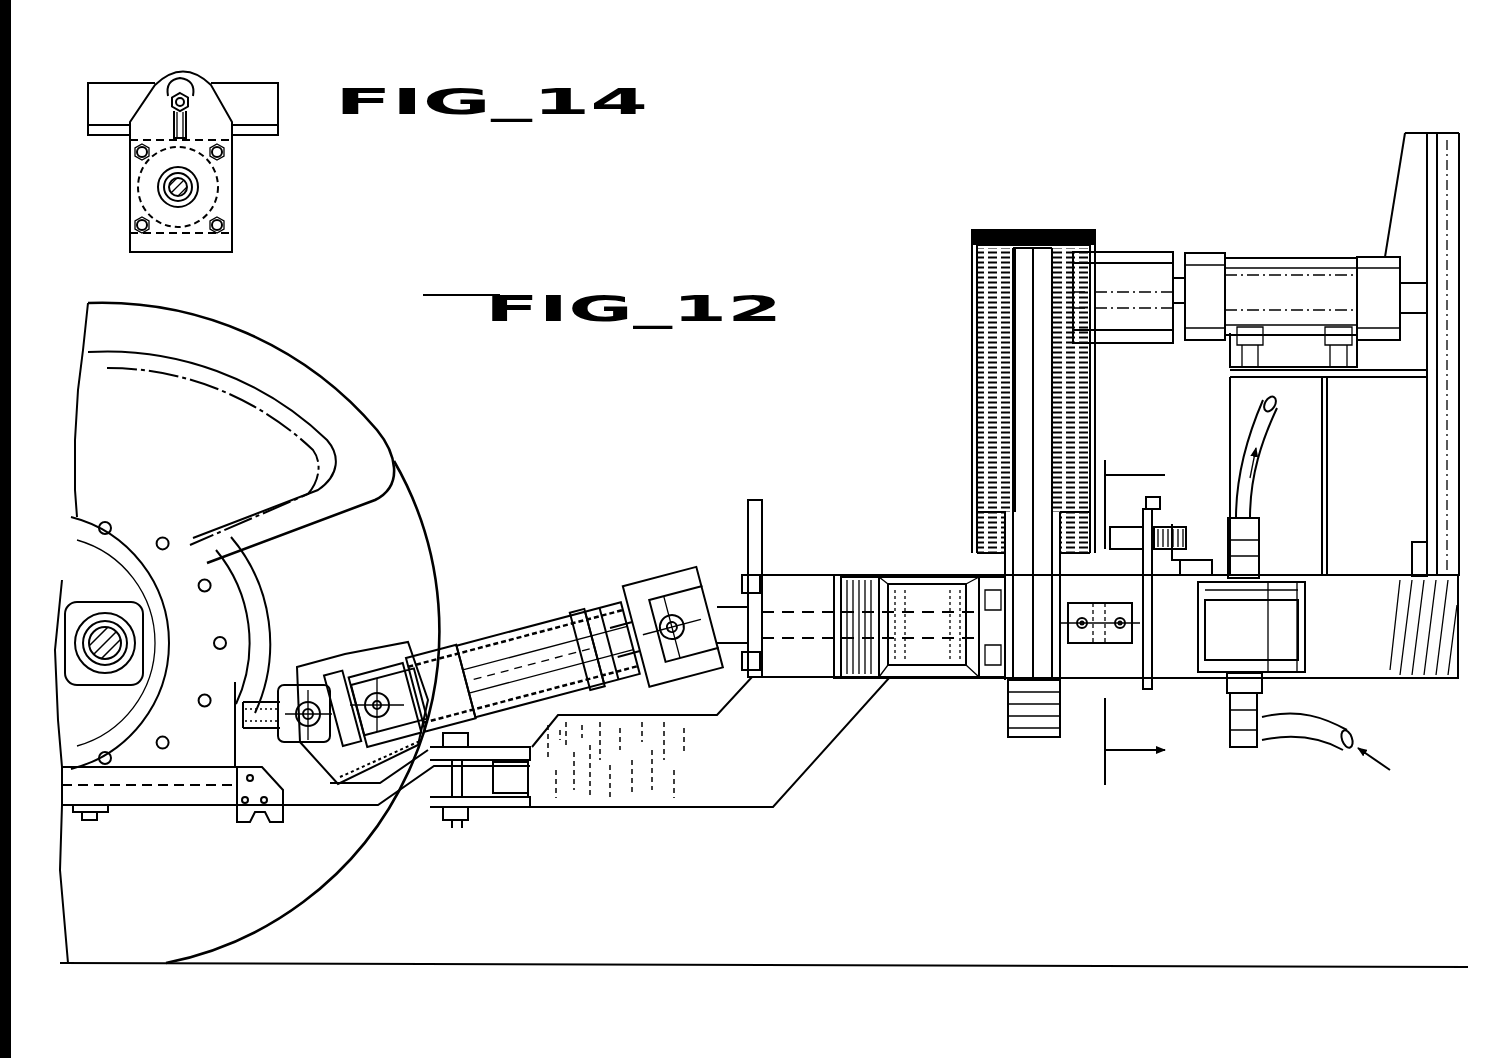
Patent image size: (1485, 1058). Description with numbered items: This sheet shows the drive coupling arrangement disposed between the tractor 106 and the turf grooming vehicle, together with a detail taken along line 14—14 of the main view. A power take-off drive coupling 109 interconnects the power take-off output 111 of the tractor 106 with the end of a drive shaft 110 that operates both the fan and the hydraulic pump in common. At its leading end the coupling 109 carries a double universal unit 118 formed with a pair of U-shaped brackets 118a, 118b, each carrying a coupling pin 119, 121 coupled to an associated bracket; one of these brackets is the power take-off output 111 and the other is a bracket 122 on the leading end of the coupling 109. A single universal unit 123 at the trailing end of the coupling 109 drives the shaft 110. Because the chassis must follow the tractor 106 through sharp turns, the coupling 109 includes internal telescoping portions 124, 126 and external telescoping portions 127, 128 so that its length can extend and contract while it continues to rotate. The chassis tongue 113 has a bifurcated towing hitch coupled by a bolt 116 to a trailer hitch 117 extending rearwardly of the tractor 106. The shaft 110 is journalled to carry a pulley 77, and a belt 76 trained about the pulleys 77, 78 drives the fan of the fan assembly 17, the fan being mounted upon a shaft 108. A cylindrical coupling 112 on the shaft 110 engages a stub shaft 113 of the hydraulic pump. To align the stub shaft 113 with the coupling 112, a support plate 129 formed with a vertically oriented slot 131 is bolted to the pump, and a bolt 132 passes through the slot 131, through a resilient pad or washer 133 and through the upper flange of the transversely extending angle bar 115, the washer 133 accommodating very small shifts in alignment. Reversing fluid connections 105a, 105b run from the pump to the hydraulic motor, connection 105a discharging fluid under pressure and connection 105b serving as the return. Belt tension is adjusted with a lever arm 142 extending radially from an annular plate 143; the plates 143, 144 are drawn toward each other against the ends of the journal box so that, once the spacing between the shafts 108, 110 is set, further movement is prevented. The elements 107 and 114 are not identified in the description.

In FIG. 12, the tractor 106 is at (355, 284).
In FIG. 12, the power take-off drive coupling 109 is at (505, 536).
In FIG. 12, the drive shaft 110 is at (745, 617).
In FIG. 12, the lever arm 142 is at (765, 525).
In FIG. 12, the annular plate 143 is at (757, 660).
In FIG. 12, the annular plate 144 is at (977, 513).
In FIG. 14, the cylindrical coupling 112 is at (160, 185).
In FIG. 12, the cylindrical coupling 112 is at (880, 548).
In FIG. 14, the stub shaft 113 is at (176, 190).
In FIG. 12, the stub shaft 113 is at (757, 772).
In FIG. 12, the pulley 78 is at (1003, 265).
In FIG. 12, the fan assembly 17 is at (1417, 163).
In FIG. 12, the resilient pad or washer 133 is at (1157, 500).
In FIG. 12, the shaft 108 is at (1413, 317).
In FIG. 12, the section line 14 is at (1135, 615).
In FIG. 12, the fluid connection 105a is at (1242, 488).
In FIG. 12, the return fluid connection 105b is at (1322, 737).
In FIG. 14, the angle bar 115 is at (258, 100).
In FIG. 12, the angle bar 115 is at (1202, 562).
In FIG. 14, the bearing housing 107 is at (222, 205).
In FIG. 12, the bearing housing 107 is at (1282, 630).
In FIG. 12, the pulley 77 is at (1008, 709).
In FIG. 12, the belt 76 is at (1022, 733).
In FIG. 12, the internal telescoping portion 126 is at (557, 660).
In FIG. 12, the internal telescoping portion 124 is at (445, 700).
In FIG. 12, the external telescoping portion 127 is at (482, 633).
In FIG. 12, the external telescoping portion 128 is at (557, 613).
In FIG. 12, the single universal unit 123 is at (667, 583).
In FIG. 12, the power take-off output 111 is at (262, 688).
In FIG. 12, the double universal unit 118 is at (333, 700).
In FIG. 12, the coupling pin 121 is at (378, 690).
In FIG. 12, the bracket 122 is at (388, 690).
In FIG. 12, the coupling pin 119 is at (300, 690).
In FIG. 12, the U-shaped bracket 118a is at (335, 760).
In FIG. 12, the U-shaped bracket 118b is at (345, 790).
In FIG. 12, the trailer hitch 117 is at (433, 767).
In FIG. 12, the bolt 116 is at (445, 823).
In FIG. 12, the bracket 114 is at (515, 766).
In FIG. 14, the vertically oriented slot 131 is at (168, 95).
In FIG. 14, the support plate 129 is at (200, 110).
In FIG. 14, the bolt 132 is at (232, 120).